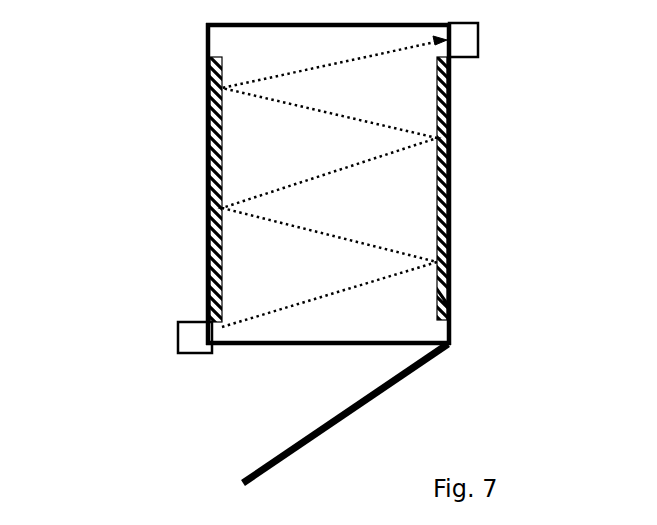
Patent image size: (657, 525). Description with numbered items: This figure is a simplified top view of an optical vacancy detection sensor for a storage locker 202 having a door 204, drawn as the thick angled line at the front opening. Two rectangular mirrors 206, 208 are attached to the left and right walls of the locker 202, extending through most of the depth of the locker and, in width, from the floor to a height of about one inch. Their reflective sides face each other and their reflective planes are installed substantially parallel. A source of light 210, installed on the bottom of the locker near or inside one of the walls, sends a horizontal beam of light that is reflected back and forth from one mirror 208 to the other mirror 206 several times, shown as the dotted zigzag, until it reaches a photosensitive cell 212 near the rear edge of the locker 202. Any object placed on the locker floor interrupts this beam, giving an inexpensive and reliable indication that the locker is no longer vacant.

The locker 202 is at (208, 52).
The door 204 is at (392, 392).
The rectangular mirror 206 is at (450, 188).
The rectangular mirror 208 is at (208, 148).
The source of light 210 is at (178, 343).
The photosensitive cell 212 is at (470, 48).